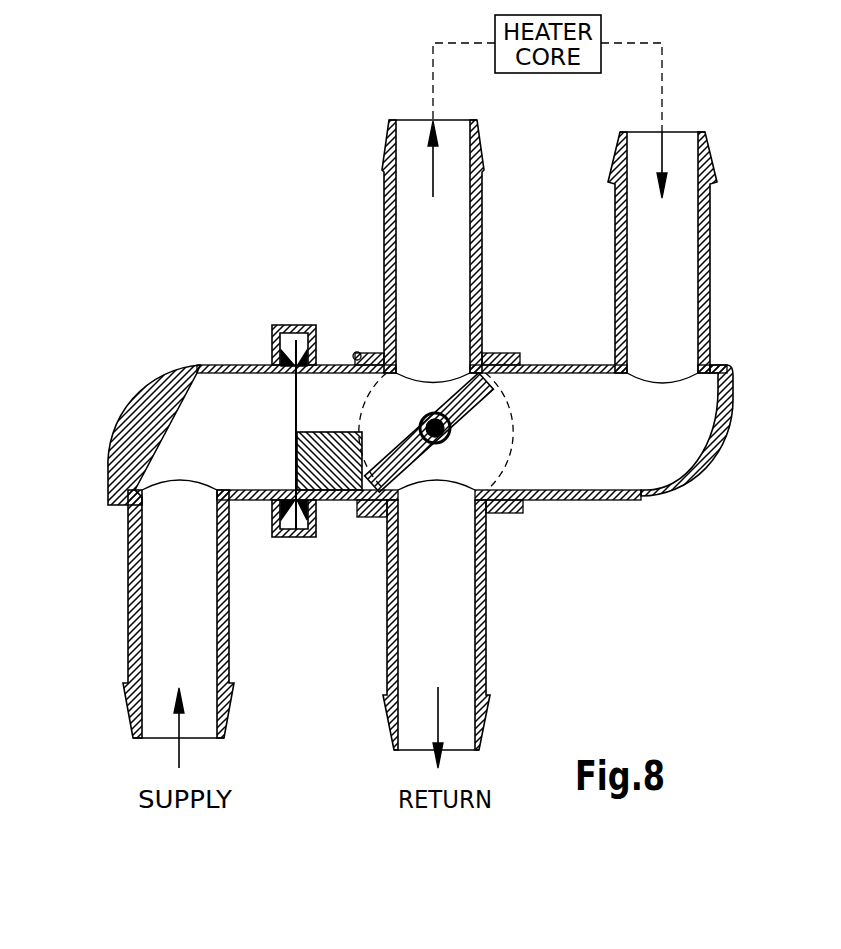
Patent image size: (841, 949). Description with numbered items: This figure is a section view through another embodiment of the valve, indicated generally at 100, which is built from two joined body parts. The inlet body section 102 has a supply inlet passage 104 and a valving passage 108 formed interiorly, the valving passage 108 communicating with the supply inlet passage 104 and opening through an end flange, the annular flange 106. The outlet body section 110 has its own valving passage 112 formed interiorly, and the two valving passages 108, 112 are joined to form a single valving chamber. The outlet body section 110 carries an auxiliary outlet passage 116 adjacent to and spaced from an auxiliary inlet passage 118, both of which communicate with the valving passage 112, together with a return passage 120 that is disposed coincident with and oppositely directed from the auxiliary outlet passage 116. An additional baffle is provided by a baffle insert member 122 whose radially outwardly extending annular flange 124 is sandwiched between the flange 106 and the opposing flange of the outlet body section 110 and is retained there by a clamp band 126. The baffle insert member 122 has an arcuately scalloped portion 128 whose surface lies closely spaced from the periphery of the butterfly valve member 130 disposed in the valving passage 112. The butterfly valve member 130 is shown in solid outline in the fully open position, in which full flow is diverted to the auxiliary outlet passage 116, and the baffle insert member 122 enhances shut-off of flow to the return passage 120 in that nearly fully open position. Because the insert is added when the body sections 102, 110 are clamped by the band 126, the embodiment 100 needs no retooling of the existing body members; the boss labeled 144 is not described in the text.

The valve 100 is at (193, 245).
The inlet body section 102 is at (117, 420).
The supply inlet passage 104 is at (122, 695).
The annular flange 106 is at (268, 538).
The valving passage 108 is at (215, 375).
The outlet body section 110 is at (537, 498).
The valving passage 112 is at (650, 487).
The auxiliary outlet passage 116 is at (384, 180).
The auxiliary inlet passage 118 is at (704, 238).
The return passage 120 is at (478, 685).
The baffle insert member 122 is at (297, 474).
The annular flange 124 is at (480, 685).
The clamp band 126 is at (278, 322).
The arcuately scalloped portion 128 is at (358, 433).
The butterfly valve member 130 is at (465, 355).
The upper bearing boss 144 is at (314, 343).